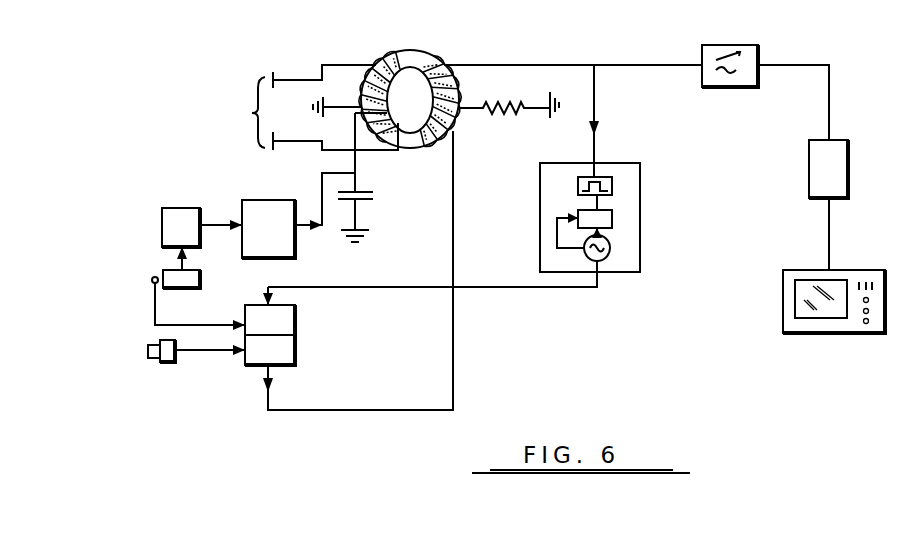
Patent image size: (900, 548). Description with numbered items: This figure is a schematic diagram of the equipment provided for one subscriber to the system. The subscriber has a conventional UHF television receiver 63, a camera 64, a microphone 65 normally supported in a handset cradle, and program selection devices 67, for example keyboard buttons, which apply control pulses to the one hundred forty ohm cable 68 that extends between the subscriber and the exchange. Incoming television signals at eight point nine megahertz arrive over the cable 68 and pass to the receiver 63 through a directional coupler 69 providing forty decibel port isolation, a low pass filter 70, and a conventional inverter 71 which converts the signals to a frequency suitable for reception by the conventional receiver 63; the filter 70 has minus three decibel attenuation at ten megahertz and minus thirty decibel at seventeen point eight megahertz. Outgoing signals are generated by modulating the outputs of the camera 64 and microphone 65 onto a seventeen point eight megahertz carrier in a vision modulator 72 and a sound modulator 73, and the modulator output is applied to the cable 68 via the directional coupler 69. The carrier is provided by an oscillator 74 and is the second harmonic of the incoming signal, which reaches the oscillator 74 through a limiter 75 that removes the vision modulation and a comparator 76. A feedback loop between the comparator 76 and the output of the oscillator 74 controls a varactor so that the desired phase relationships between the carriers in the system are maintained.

The UHF television receiver 63 is at (802, 305).
The camera 64 is at (172, 360).
The microphone 65 is at (152, 280).
The program selection devices 67 is at (182, 227).
The cable 68 is at (246, 111).
The directional coupler 69 is at (392, 63).
The low pass filter 70 is at (712, 50).
The inverter 71 is at (823, 158).
The vision modulator 72 is at (275, 347).
The sound modulator 73 is at (272, 325).
The oscillator 74 is at (608, 248).
The limiter 75 is at (612, 187).
The comparator 76 is at (612, 218).